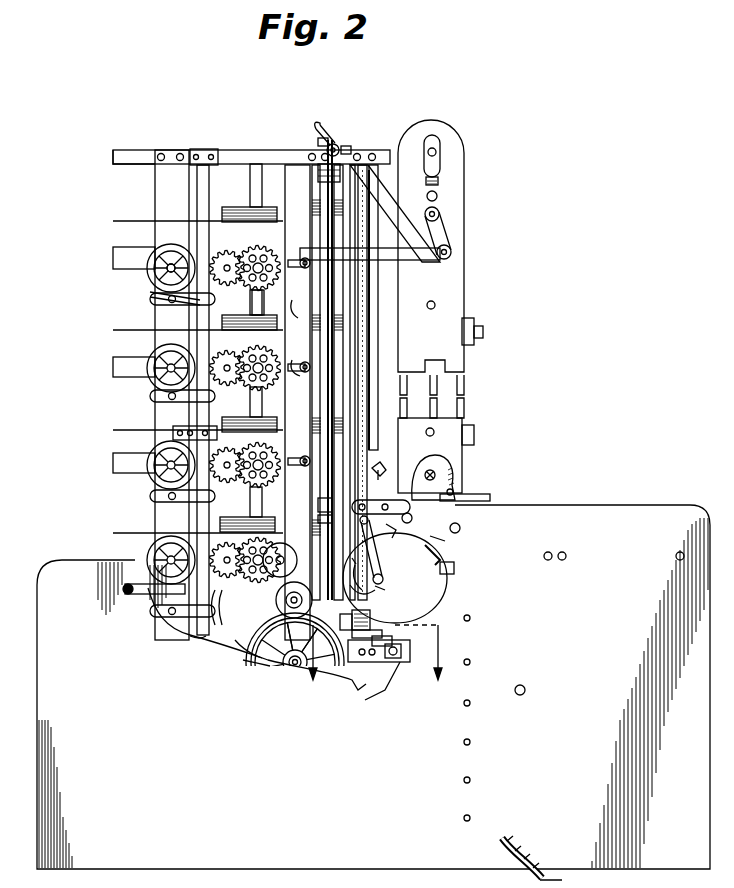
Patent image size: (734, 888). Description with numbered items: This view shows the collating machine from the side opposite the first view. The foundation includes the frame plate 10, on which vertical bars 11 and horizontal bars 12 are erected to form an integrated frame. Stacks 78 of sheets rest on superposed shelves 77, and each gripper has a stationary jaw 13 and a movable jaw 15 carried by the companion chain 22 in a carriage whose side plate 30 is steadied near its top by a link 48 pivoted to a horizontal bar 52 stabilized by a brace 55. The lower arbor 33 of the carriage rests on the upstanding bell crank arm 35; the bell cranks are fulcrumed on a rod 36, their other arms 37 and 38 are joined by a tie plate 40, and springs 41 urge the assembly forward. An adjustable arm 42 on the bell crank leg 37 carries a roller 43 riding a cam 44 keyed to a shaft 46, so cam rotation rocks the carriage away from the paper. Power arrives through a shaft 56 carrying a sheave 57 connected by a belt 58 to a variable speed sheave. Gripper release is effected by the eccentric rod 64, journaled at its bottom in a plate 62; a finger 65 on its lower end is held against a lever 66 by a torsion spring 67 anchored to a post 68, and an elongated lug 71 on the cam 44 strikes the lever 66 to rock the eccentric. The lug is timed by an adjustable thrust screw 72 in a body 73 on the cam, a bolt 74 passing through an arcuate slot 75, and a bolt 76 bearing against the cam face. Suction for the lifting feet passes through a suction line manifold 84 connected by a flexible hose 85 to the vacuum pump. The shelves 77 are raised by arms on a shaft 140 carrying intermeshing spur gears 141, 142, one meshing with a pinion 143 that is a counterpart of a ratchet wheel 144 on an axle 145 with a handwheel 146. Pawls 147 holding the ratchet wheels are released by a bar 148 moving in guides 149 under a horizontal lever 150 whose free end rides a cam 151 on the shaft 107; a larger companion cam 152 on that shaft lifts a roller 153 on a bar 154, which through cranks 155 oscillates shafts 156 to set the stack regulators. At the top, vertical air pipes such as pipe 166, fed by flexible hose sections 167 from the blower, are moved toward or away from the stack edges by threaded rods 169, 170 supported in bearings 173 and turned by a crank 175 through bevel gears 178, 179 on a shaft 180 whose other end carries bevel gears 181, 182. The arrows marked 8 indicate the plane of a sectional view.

The frame plate 10 is at (615, 516).
The vertical bar 11 is at (177, 152).
The horizontal bar 12 is at (113, 165).
The stationary jaw 13 is at (479, 340).
The movable jaw 15 is at (472, 324).
The companion chain 22 is at (466, 417).
The carriage side plate 30 is at (462, 284).
The lower arbor 33 is at (430, 470).
The bell crank arm 35 is at (455, 473).
The fulcrum rod 36 is at (460, 528).
The bell crank leg 37 is at (473, 493).
The bell crank arm 38 is at (372, 468).
The tie plate 40 is at (440, 541).
The spring 41 is at (454, 569).
The adjustable arm 42 is at (391, 506).
The roller 43 is at (358, 565).
The cam 44 is at (430, 606).
The shaft 46 is at (375, 601).
The link 48 is at (450, 232).
The horizontal bar 52 is at (396, 253).
The brace 55 is at (392, 212).
The shaft 56 is at (297, 672).
The sheave 57 is at (266, 662).
The belt 58 is at (240, 645).
The plate 62 is at (382, 657).
The eccentric rod 64 is at (374, 376).
The finger 65 is at (360, 630).
The lever 66 is at (392, 643).
The torsion spring 67 is at (361, 612).
The post 68 is at (344, 616).
The elongated lug 71 is at (408, 521).
The adjustable thrust screw 72 is at (440, 560).
The body 73 is at (381, 590).
The bolt 74 is at (374, 566).
The arcuate slot 75 is at (374, 578).
The bolt 76 is at (388, 531).
The shelf 77 is at (113, 221).
The stack of sheets 78 is at (240, 207).
The suction line manifold 84 is at (256, 179).
The flexible hose 85 is at (216, 606).
The shaft 107 is at (291, 637).
The shaft 140 is at (250, 404).
The spur gear 141 is at (193, 242).
The spur gear 142 is at (242, 302).
The pinion 143 is at (158, 275).
The ratchet wheel 144 is at (154, 256).
The axle 145 is at (163, 294).
The handwheel 146 is at (155, 223).
The pawl 147 is at (165, 300).
The bar 148 is at (200, 640).
The guide 149 is at (207, 150).
The horizontal lever 150 is at (125, 590).
The cam 151 is at (281, 604).
The companion cam 152 is at (280, 596).
The roller 153 is at (282, 549).
The bar 154 is at (286, 222).
The crank 155 is at (302, 328).
The shaft 156 is at (300, 257).
The air pipe 166 is at (325, 300).
The flexible hose section 167 is at (352, 560).
The threaded rod 169 is at (334, 144).
The threaded rod 170 is at (334, 520).
The bearing 173 is at (345, 148).
The crank 175 is at (316, 129).
The vertical bevel gear 178 is at (318, 142).
The horizontal bevel gear 179 is at (318, 153).
The shaft 180 is at (328, 188).
The horizontal bevel gear 181 is at (334, 490).
The vertical bevel gear 182 is at (350, 507).
The section line 8 is at (375, 668).